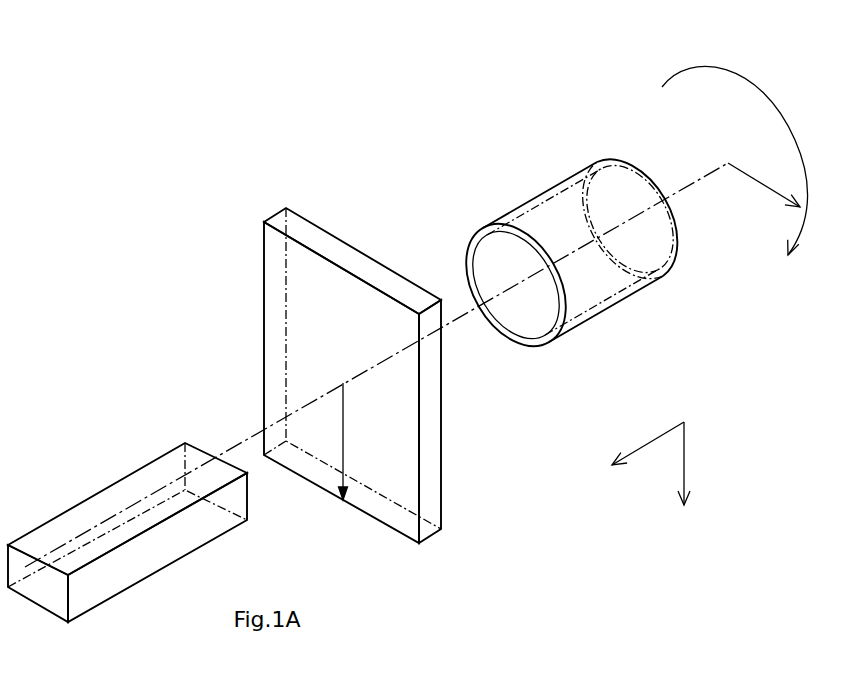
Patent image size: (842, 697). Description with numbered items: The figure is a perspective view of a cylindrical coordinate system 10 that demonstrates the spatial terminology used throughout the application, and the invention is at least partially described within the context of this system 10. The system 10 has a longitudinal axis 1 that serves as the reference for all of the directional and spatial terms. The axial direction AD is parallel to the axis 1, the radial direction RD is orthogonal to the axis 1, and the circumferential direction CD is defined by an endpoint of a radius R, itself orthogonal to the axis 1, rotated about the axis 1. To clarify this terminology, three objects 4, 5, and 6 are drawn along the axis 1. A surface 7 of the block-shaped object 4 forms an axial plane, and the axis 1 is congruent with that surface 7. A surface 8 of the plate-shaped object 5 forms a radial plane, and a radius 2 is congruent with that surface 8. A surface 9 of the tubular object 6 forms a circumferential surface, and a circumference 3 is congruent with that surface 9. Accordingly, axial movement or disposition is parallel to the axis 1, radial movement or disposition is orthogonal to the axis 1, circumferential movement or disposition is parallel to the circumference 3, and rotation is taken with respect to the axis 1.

The longitudinal axis 1 is at (668, 197).
The radius 2 is at (343, 435).
The circumference 3 is at (468, 252).
The object 4 is at (97, 614).
The object 5 is at (456, 535).
The object 6 is at (602, 322).
The surface 7 is at (88, 517).
The surface 8 is at (280, 336).
The surface 9 is at (541, 194).
The cylindrical coordinate system 10 is at (212, 253).
The radius R is at (765, 190).
The circumferential direction CD is at (733, 72).
The axial direction AD is at (648, 440).
The radial direction RD is at (685, 458).